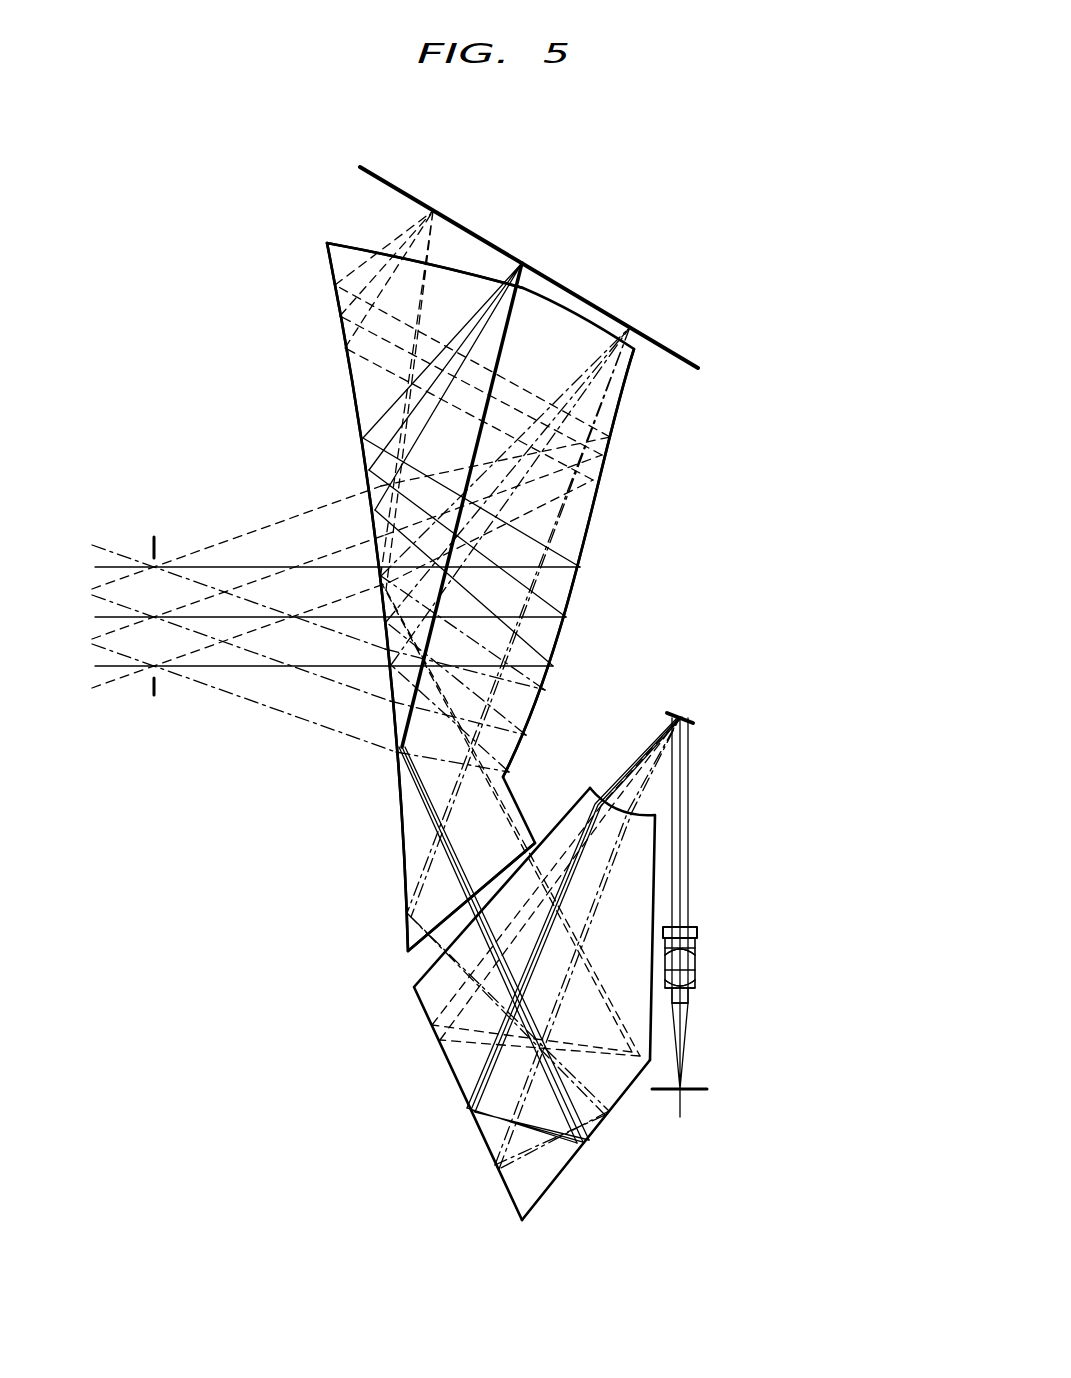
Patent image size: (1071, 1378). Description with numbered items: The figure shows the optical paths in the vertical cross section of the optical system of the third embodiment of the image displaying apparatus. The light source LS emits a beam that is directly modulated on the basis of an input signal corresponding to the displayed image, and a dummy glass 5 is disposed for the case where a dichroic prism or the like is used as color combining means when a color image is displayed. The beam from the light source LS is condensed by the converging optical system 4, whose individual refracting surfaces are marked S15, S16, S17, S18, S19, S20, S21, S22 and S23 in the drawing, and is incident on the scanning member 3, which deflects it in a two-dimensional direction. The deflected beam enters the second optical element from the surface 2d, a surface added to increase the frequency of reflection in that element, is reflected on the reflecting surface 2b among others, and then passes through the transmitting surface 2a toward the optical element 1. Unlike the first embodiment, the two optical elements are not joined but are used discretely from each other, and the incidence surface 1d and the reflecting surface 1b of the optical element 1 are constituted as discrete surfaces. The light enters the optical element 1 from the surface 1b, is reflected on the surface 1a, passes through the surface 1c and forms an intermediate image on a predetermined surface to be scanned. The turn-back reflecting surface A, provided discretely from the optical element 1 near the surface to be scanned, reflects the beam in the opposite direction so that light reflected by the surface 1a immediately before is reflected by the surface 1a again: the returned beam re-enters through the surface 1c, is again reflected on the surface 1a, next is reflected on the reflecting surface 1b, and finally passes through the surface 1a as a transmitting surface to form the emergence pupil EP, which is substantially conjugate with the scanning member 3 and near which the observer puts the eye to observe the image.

The optical element 1 is at (323, 237).
The reflecting surface 1a is at (348, 357).
The reflecting surface 1b is at (595, 502).
The surface 1c is at (358, 249).
The incidence surface 1d is at (413, 948).
The turn-back reflecting surface A is at (573, 290).
The emergence pupil EP is at (154, 537).
The transmitting surface 2a is at (423, 977).
The reflecting surface 2b is at (587, 1132).
The surface 2d is at (595, 793).
The scanning member 3 is at (684, 717).
The converging optical system 4 is at (755, 937).
The lens surface S15 is at (690, 927).
The lens surface S16 is at (697, 930).
The lens surface S17 is at (697, 934).
The lens surface S18 is at (697, 958).
The lens surface S19 is at (697, 977).
The lens surface S20 is at (697, 990).
The lens surface S21 is at (695, 1000).
The lens surface S22 is at (697, 1007).
The surface S23 is at (690, 1093).
The light source LS is at (683, 1093).
The dummy glass 5 is at (708, 1072).